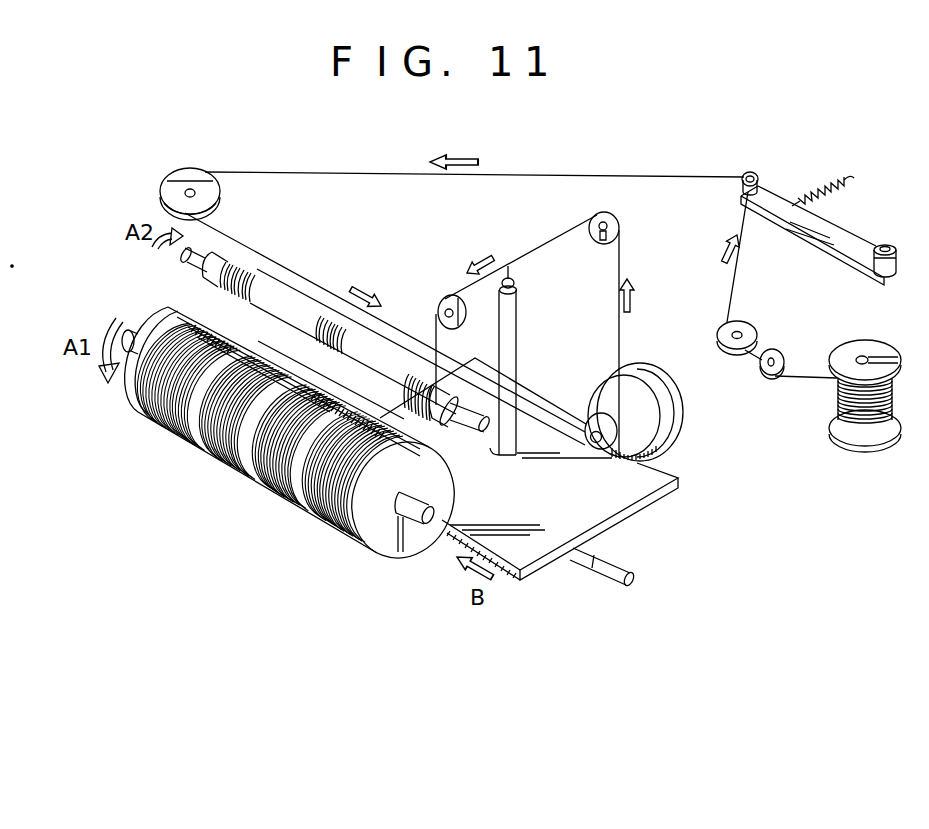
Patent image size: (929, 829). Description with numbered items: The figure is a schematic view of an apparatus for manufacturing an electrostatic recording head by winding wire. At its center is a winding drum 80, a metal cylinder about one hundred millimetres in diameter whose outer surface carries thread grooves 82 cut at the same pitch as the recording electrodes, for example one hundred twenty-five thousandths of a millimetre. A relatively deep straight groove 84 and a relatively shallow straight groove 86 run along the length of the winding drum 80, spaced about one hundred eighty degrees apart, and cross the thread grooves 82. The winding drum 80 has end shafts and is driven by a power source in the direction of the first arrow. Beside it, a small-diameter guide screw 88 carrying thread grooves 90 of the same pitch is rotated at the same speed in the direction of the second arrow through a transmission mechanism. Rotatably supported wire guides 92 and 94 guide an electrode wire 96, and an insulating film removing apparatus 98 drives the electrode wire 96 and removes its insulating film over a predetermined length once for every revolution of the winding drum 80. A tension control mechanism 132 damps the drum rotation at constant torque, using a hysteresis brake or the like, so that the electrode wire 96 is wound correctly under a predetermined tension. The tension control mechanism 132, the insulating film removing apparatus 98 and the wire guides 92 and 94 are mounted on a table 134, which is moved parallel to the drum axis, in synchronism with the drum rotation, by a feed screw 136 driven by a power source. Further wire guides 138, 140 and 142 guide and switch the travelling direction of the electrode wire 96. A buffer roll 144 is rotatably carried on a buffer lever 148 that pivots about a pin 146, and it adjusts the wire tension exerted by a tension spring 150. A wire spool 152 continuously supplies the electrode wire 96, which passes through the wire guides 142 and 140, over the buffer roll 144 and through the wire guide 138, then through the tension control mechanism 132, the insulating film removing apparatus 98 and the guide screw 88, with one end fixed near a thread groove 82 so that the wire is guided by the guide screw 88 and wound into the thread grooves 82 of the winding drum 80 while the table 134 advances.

The winding drum 80 is at (390, 560).
The thread grooves 82 is at (160, 343).
The relatively deep straight groove 84 is at (182, 310).
The relatively shallow straight groove 86 is at (197, 447).
The guide screw 88 is at (230, 263).
The thread grooves 90 is at (257, 270).
The wire guide 92 is at (441, 304).
The wire guide 94 is at (620, 228).
The electrode wire 96 is at (534, 250).
The insulating film removing apparatus 98 is at (517, 313).
The tension control mechanism 132 is at (653, 371).
The table 134 is at (676, 468).
The feed screw 136 is at (600, 553).
The wire guide 138 is at (199, 169).
The wire guide 140 is at (750, 327).
The wire guide 142 is at (770, 376).
The buffer roll 144 is at (757, 172).
The pin 146 is at (888, 241).
The buffer lever 148 is at (790, 226).
The tension spring 150 is at (832, 176).
The wire spool 152 is at (838, 440).